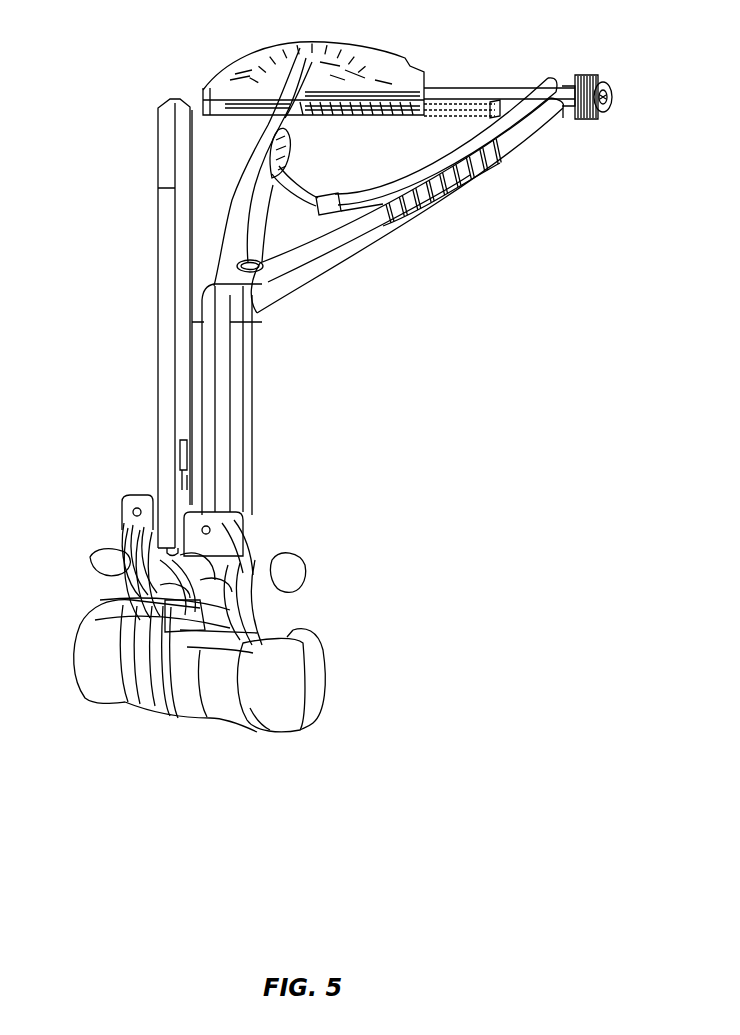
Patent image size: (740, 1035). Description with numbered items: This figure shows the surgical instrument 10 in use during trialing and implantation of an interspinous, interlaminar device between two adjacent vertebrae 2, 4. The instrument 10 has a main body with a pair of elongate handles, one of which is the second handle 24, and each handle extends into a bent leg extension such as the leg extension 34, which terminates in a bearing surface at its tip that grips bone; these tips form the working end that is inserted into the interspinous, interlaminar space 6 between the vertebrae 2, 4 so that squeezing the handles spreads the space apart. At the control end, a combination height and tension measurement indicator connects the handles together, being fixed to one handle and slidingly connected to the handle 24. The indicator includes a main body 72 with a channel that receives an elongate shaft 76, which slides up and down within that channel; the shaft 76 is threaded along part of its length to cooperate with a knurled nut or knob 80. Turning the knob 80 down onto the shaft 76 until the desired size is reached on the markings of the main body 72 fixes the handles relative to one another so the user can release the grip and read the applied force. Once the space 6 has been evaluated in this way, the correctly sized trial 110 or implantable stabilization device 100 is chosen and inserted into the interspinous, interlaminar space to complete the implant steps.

The vertebra 2 is at (90, 670).
The vertebra 4 is at (293, 707).
The interspinous, interlaminar space 6 is at (168, 586).
The surgical instrument 10 is at (298, 277).
The second handle 24 is at (512, 132).
The leg extension 34 is at (243, 393).
The main body of indicator 72 is at (380, 58).
The elongate shaft 76 is at (482, 92).
The knurled nut or knob 80 is at (610, 85).
The interspinous, interlaminar stabilization device 100 is at (148, 508).
The trial 110 is at (168, 288).